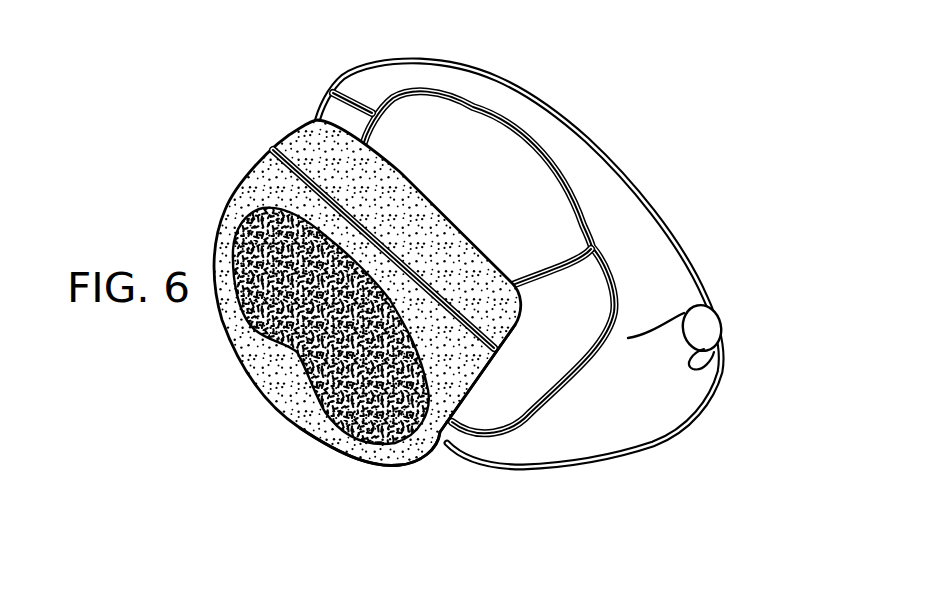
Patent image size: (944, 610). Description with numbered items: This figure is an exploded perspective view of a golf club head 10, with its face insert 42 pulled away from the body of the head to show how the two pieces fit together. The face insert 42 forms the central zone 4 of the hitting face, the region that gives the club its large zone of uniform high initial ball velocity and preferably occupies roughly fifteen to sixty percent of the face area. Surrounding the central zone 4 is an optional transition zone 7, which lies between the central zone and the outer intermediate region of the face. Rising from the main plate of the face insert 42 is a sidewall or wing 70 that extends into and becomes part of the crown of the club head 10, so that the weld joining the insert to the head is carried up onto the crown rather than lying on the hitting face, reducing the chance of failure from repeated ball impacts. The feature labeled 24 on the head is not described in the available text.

The club head 10 is at (761, 318).
The sidewall or wing 70 is at (367, 314).
The transition zone 7 is at (281, 387).
The central zone 4 is at (340, 339).
The face insert 42 is at (419, 461).
The knob 24 is at (700, 358).